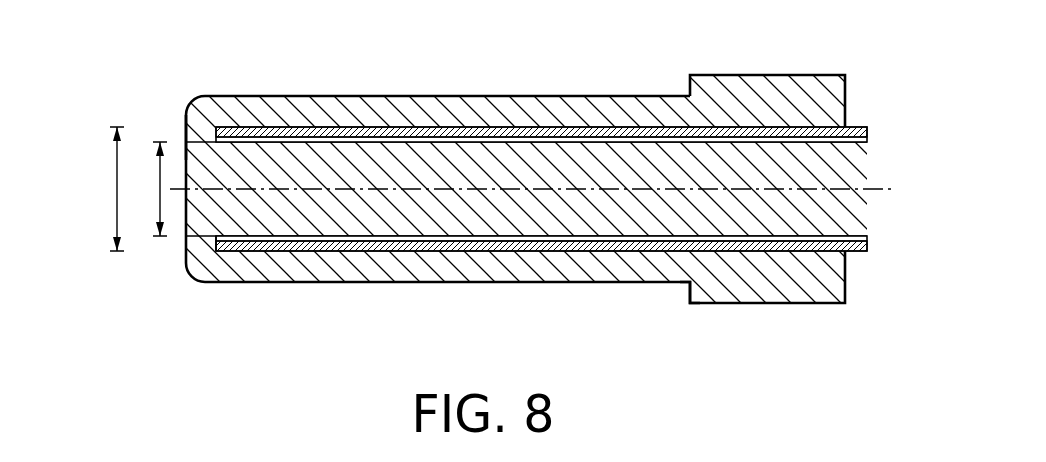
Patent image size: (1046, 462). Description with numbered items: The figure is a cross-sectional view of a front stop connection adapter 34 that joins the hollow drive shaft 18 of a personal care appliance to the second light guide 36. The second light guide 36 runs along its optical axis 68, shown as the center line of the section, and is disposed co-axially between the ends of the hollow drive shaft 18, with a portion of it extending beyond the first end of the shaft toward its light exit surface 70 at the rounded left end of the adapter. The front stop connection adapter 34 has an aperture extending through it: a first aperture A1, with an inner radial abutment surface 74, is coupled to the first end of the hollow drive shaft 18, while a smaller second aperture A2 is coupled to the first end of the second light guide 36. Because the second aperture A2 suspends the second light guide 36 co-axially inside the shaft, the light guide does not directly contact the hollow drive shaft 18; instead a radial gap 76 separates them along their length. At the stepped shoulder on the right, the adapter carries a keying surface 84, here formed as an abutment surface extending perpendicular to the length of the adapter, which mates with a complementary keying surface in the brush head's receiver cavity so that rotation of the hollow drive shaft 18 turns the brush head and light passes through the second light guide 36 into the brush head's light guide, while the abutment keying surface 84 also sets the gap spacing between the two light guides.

The front stop connection adapter 34 is at (316, 78).
The second light guide 36 is at (450, 150).
The radial gap 76 is at (614, 142).
The hollow drive shaft 18 is at (678, 134).
The optical axis 68 is at (873, 189).
The light exit surface 70 is at (186, 157).
The inner radial abutment surface 74 is at (216, 247).
The keying surface 84 is at (690, 284).
The first aperture A1 is at (102, 189).
The second aperture A2 is at (146, 189).